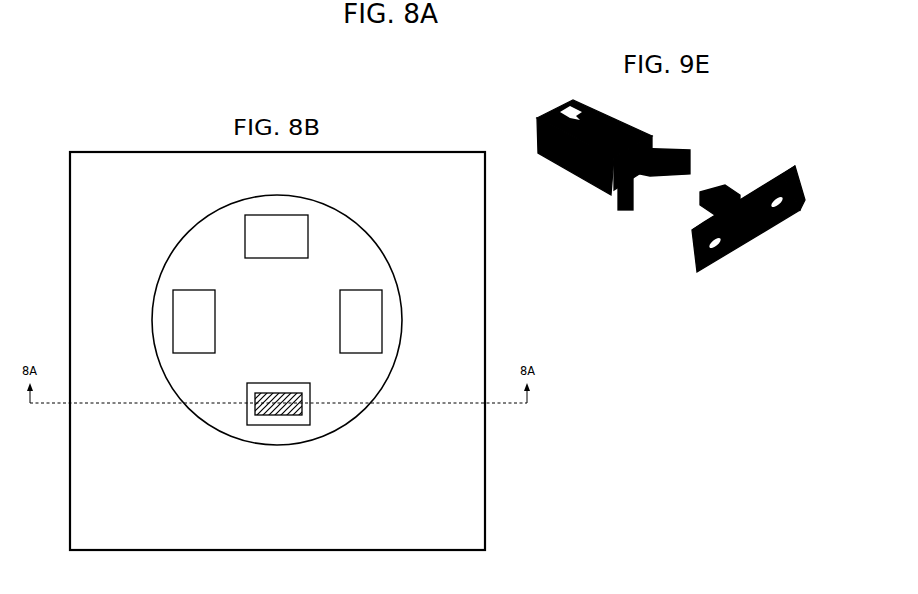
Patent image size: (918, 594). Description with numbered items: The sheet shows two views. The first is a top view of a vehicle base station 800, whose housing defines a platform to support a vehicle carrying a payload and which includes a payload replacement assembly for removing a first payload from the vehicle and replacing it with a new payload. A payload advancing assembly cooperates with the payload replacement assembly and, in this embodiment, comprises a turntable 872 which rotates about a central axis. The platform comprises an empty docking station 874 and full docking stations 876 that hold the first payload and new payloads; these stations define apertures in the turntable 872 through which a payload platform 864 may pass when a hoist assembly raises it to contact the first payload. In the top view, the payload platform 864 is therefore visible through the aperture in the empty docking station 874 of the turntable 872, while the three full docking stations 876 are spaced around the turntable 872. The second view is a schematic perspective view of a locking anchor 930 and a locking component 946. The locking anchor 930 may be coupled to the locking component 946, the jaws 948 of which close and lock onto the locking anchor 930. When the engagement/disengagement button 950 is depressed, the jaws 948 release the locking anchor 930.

In FIG. 8B, the vehicle base station 800 is at (277, 351).
In FIG. 8B, the turntable 872 is at (277, 320).
In FIG. 8B, the full docking stations 876 is at (280, 215).
In FIG. 8B, the empty docking station 874 is at (278, 425).
In FIG. 8B, the payload platform 864 is at (278, 393).
In FIG. 9E, the locking component 946 is at (572, 92).
In FIG. 9E, the jaws 948 is at (670, 150).
In FIG. 9E, the engagement/disengagement button 950 is at (636, 177).
In FIG. 9E, the locking anchor 930 is at (722, 187).